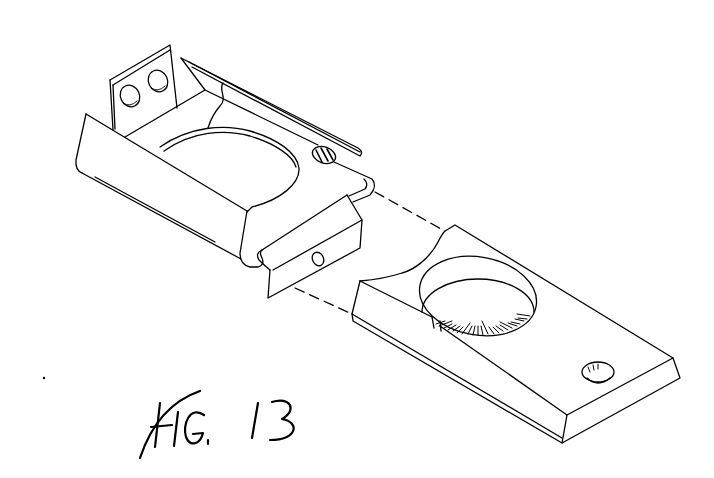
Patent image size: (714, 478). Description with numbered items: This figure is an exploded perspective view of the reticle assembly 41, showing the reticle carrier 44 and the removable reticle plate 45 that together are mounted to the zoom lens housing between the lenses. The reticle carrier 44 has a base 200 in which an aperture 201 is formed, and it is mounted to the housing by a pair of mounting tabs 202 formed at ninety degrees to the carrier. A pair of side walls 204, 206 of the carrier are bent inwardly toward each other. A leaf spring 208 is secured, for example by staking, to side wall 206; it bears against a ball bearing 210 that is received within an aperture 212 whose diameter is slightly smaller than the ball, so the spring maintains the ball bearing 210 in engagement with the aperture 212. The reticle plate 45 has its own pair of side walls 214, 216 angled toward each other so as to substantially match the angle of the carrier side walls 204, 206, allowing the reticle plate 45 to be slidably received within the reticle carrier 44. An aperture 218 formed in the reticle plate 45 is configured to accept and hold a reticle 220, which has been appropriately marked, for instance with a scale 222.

The reticle assembly 41 is at (468, 163).
The reticle carrier 44 is at (202, 243).
The reticle plate 45 is at (577, 312).
The base 200 is at (143, 207).
The aperture 201 is at (223, 78).
The mounting tabs 202 is at (147, 57).
The side wall 204 is at (97, 182).
The side wall 206 is at (368, 169).
The leaf spring 208 is at (353, 147).
The ball bearing 210 is at (313, 151).
The aperture 212 is at (342, 163).
The side wall 214 is at (497, 401).
The side wall 216 is at (673, 358).
The aperture 218 is at (471, 262).
The reticle 220 is at (531, 290).
The scale 222 is at (463, 331).